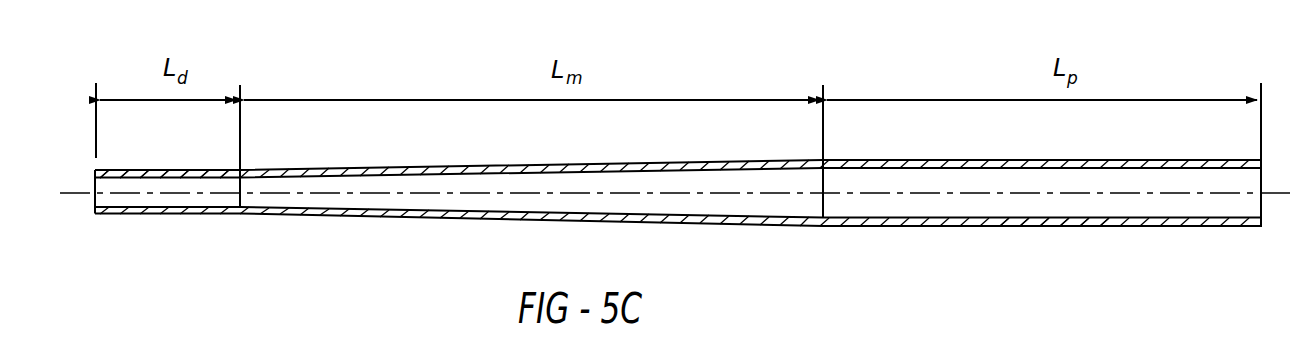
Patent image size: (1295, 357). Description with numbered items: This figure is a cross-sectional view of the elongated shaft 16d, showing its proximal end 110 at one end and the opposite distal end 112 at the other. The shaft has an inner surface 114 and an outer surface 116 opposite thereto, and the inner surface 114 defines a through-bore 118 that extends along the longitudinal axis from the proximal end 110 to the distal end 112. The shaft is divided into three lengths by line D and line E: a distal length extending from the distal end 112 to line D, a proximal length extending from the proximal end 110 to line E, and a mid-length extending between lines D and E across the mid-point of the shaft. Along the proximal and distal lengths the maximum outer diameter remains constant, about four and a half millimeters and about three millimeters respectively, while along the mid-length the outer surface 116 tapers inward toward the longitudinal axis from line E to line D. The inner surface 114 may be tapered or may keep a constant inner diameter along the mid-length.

The elongated shaft 16d is at (418, 57).
The proximal end 110 is at (1258, 203).
The distal end 112 is at (95, 193).
The inner surface 114 is at (137, 182).
The outer surface 116 is at (1067, 223).
The through-bore 118 is at (105, 199).
The line D is at (240, 193).
The line E is at (823, 193).